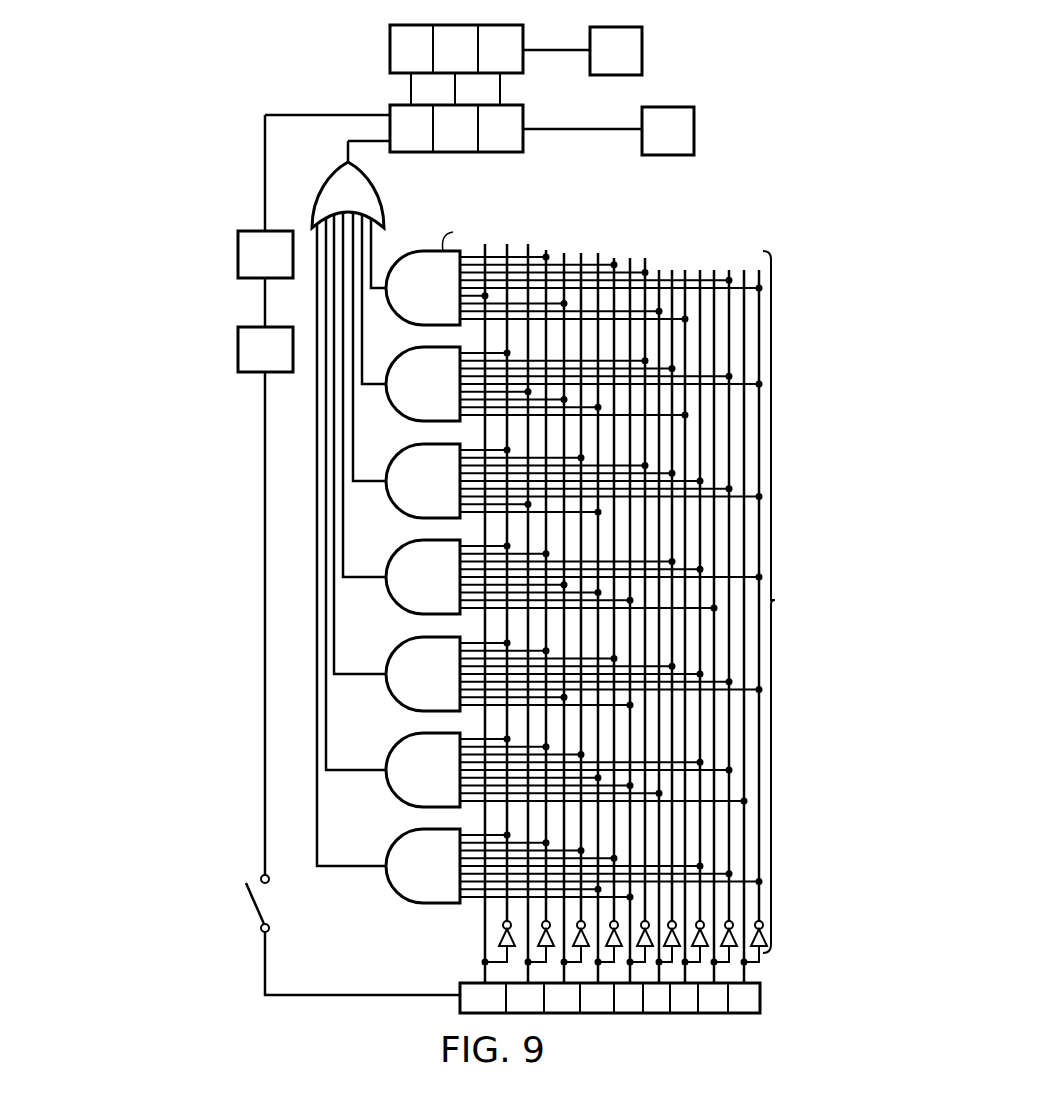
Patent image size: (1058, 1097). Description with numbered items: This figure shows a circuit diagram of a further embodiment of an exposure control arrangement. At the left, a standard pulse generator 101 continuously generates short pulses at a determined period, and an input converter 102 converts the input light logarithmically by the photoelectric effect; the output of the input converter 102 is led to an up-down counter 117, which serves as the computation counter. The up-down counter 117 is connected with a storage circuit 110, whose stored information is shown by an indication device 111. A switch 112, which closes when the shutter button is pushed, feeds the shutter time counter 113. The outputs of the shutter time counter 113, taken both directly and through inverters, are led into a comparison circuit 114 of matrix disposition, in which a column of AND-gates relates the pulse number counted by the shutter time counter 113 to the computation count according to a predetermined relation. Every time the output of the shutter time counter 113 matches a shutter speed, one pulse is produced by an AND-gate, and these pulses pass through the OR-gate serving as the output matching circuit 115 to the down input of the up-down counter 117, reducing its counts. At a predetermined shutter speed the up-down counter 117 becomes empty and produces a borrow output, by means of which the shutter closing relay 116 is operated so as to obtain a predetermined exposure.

The storage circuit 110 is at (390, 52).
The indication device 111 is at (645, 38).
The up-down counter 117 is at (514, 152).
The shutter closing relay 116 is at (690, 110).
The output matching circuit 115 is at (372, 192).
The input converter 102 is at (238, 258).
The standard pulse generator 101 is at (238, 364).
The switch 112 is at (250, 900).
The shutter time counter 113 is at (460, 992).
The comparison circuit 114 is at (645, 600).